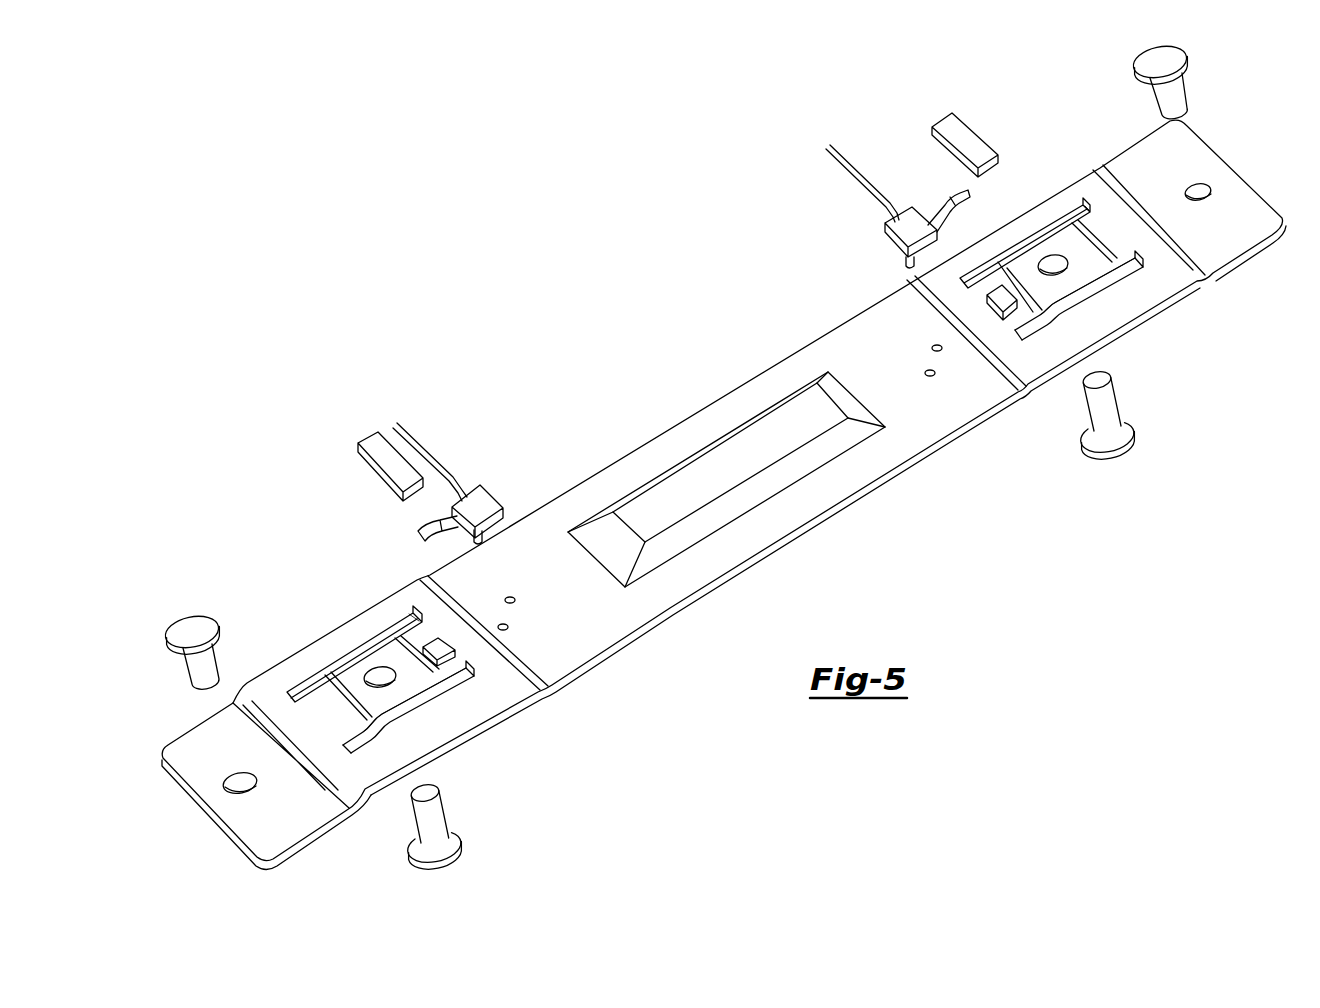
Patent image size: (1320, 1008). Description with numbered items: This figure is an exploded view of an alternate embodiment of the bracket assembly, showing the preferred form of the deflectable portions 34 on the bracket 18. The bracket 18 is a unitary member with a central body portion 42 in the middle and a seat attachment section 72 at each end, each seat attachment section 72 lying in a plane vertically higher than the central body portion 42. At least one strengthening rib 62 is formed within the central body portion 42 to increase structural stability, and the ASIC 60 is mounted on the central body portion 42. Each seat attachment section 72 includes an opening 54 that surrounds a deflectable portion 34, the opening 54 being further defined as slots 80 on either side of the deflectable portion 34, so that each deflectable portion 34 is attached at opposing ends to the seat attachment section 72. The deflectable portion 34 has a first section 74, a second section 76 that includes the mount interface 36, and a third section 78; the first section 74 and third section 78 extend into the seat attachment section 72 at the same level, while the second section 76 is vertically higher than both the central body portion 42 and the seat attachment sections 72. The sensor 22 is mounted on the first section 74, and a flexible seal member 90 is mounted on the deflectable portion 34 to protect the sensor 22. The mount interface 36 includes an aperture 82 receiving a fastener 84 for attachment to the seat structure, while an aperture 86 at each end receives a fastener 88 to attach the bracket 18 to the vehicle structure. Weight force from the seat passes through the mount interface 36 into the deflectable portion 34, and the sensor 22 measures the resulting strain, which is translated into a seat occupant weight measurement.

The bracket 18 is at (645, 358).
The sensor 22 is at (437, 648).
The deflectable portion 34 is at (370, 758).
The mount interface 36 is at (347, 673).
The central body portion 42 is at (685, 438).
The opening 54 is at (293, 688).
The ASIC 60 is at (500, 463).
The strengthening rib 62 is at (773, 425).
The seat attachment section 72 is at (448, 737).
The first section 74 is at (453, 670).
The second section 76 is at (405, 682).
The third section 78 is at (325, 718).
The slot 80 is at (409, 614).
The aperture 82 is at (377, 677).
The fastener 84 is at (440, 841).
The aperture 86 is at (240, 786).
The fastener 88 is at (185, 628).
The flexible seal member 90 is at (380, 442).